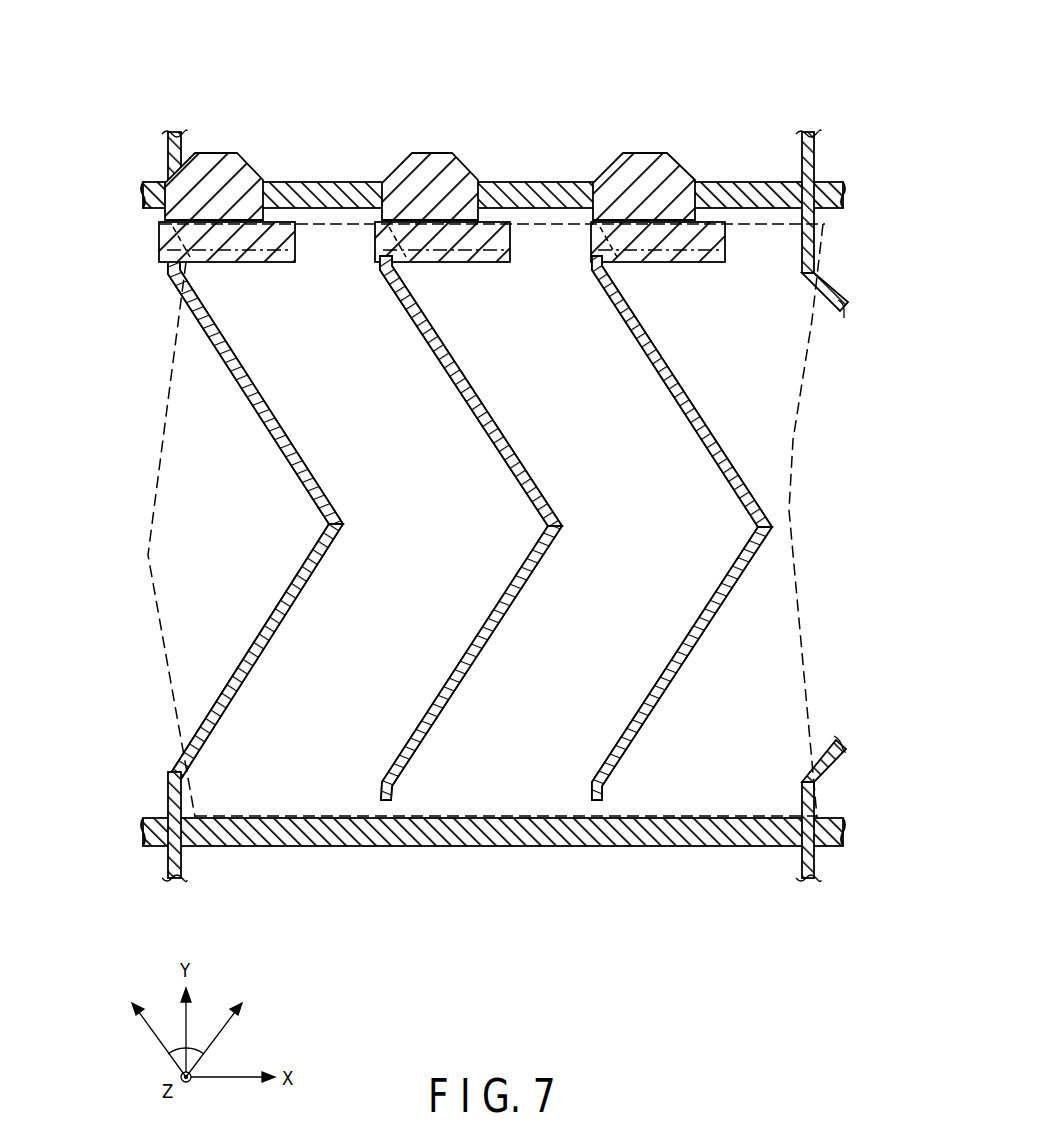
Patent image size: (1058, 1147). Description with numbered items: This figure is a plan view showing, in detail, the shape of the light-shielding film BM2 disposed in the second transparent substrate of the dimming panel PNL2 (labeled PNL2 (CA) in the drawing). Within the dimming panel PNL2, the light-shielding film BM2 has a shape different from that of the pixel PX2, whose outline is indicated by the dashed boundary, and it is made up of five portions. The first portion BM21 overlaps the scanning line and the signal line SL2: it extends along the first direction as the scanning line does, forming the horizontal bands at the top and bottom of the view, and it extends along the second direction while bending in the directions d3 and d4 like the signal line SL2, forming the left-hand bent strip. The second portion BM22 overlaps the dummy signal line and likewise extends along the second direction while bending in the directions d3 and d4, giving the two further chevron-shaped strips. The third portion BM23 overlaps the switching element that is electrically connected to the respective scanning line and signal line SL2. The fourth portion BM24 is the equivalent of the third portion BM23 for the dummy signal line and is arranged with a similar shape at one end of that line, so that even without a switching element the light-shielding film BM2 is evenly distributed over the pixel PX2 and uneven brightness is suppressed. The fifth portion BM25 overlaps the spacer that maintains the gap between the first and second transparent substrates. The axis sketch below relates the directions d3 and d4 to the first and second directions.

The dimming panel PNL2 is at (835, 43).
The counter substrate (color filter substrate) CA is at (784, 79).
The light-shielding film BM2 is at (498, 847).
The first portion BM21 is at (553, 181).
The second portion BM22 is at (490, 440).
The third portion BM23 is at (218, 218).
The fourth portion BM24 is at (438, 220).
The fifth portion BM25 is at (250, 238).
The signal line SL2 is at (814, 146).
The pixel PX2 is at (794, 440).
The direction d3 is at (221, 1029).
The direction d4 is at (152, 1029).